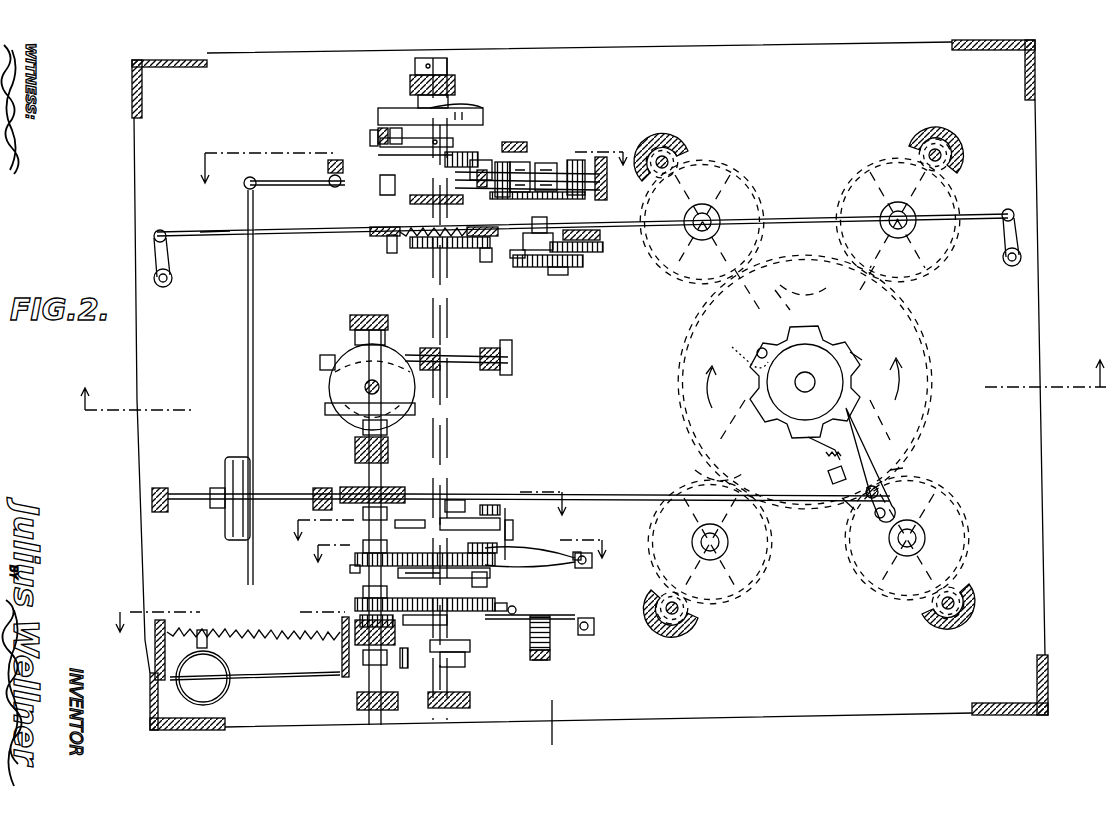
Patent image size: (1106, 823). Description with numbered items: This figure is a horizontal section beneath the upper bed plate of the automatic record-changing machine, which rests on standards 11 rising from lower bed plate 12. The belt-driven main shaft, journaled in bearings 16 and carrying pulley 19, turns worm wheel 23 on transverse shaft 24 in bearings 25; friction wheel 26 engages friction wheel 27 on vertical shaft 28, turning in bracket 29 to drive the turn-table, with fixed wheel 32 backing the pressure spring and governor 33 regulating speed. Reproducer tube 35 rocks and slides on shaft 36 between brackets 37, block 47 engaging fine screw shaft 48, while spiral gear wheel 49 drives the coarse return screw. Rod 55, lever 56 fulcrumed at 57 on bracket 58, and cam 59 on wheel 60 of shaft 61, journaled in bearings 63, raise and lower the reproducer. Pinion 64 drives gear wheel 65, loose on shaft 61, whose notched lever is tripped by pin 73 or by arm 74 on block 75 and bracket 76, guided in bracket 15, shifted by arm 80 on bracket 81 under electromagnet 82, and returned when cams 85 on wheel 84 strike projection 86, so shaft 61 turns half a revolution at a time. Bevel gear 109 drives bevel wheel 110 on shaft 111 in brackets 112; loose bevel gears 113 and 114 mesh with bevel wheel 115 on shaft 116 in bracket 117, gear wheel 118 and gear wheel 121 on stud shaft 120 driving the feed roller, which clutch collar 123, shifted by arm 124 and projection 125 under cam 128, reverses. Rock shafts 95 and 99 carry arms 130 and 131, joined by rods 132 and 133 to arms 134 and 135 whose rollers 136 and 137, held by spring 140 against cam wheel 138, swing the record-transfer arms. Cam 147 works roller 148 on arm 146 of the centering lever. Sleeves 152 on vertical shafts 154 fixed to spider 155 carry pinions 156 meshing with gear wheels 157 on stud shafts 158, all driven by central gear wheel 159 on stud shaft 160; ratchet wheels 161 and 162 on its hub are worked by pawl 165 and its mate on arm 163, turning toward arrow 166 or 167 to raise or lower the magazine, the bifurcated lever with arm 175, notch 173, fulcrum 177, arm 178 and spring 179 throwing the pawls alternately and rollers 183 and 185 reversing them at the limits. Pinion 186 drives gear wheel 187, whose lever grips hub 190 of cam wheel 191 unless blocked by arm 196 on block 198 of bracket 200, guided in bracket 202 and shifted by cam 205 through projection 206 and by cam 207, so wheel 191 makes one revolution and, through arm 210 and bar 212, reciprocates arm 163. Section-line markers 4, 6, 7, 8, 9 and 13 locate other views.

The standards 11 is at (172, 58).
The lower bed plate 12 is at (758, 47).
The gear 13 is at (290, 612).
The bracket 15 is at (570, 612).
The bearings 16 is at (152, 495).
The pulley 19 is at (225, 470).
The worm wheel 23 is at (345, 487).
The transverse driving shaft 24 is at (362, 546).
The bearings 25 is at (355, 450).
The friction wheel 26 is at (325, 410).
The friction wheel 27 is at (355, 348).
The vertical shaft 28 is at (365, 389).
The bracket 29 is at (365, 315).
The fixed wheel 32 is at (320, 368).
The governor 33 is at (462, 352).
The tube 35 is at (178, 680).
The shaft 36 is at (268, 674).
The brackets 37 is at (155, 655).
The block 47 is at (202, 630).
The fine screw-threaded shaft 48 is at (270, 630).
The spiral gear wheel 49 is at (355, 635).
The rod 55 is at (248, 297).
The lever 56 is at (285, 186).
The fulcrum 57 is at (335, 188).
The bracket 58 is at (328, 166).
The cam 59 is at (380, 157).
The cam wheel 60 is at (395, 112).
The shaft 61 is at (442, 57).
The bearings 63 is at (452, 78).
The pinion 64 is at (355, 560).
The gear wheel 65 is at (472, 578).
The pin 73 is at (413, 661).
The arm 74 is at (510, 608).
The block 75 is at (585, 636).
The bracket 76 is at (590, 632).
The arm 80 is at (514, 607).
The bracket 81 is at (546, 662).
The electromagnet 82 is at (550, 658).
The wheel 84 is at (465, 660).
The cams 85 is at (470, 645).
The projection 86 is at (550, 640).
The rock shaft 95 is at (1022, 258).
The rock shaft 99 is at (172, 278).
The bevel gear wheel 109 is at (410, 200).
The bevel wheel 110 is at (445, 180).
The shaft 111 is at (560, 170).
The brackets 112 is at (482, 188).
The bevel gear wheel 113 is at (508, 142).
The bevel gear wheel 114 is at (575, 160).
The bevel gear wheel 115 is at (585, 200).
The shaft 116 is at (548, 272).
The bracket 117 is at (600, 236).
The gear wheel 118 is at (520, 269).
The stud shaft 120 is at (577, 278).
The gear wheel 121 is at (592, 252).
The clutch collar 123 is at (545, 163).
The arm 124 is at (518, 162).
The projection 125 is at (505, 160).
The cam 128 is at (390, 140).
The arm 130 is at (1016, 238).
The arm 131 is at (152, 250).
The rod 132 is at (797, 212).
The rod 133 is at (212, 230).
The arm 134 is at (490, 256).
The arm 135 is at (378, 228).
The roller 136 is at (462, 249).
The roller 137 is at (387, 245).
The wheel 138 is at (470, 237).
The spring 140 is at (425, 228).
The arm 146 is at (378, 134).
The cam 147 is at (415, 68).
The roller 148 is at (372, 132).
The screw-threaded sleeves 152 is at (925, 150).
The vertical shafts 154 is at (660, 145).
The brace plate or spider 155 is at (968, 578).
The pinions 156 is at (685, 150).
The gear wheels 157 is at (722, 165).
The stud shafts 158 is at (895, 220).
The gear wheel 159 is at (932, 380).
The stud shaft 160 is at (805, 382).
The ratchet wheel 161 is at (862, 360).
The ratchet wheel 162 is at (840, 338).
The arm 163 is at (885, 488).
The pulling pawl 165 is at (815, 447).
The arrow 166 is at (729, 387).
The arrow 167 is at (913, 379).
The notch 173 is at (870, 455).
The arm 175 is at (902, 468).
The fulcrum 177 is at (828, 462).
The arm 178 is at (832, 478).
The spring 179 is at (840, 505).
The roller 183 is at (736, 347).
The roller 185 is at (763, 347).
The pinion 186 is at (350, 568).
The gear wheel 187 is at (532, 566).
The hub 190 is at (470, 518).
The cam wheel 191 is at (455, 500).
The arm 196 is at (532, 547).
The block 198 is at (589, 545).
The bracket 200 is at (592, 562).
The bracket 202 is at (510, 520).
The cam 205 is at (440, 582).
The projection 206 is at (490, 554).
The cam 207 is at (410, 518).
The arm 210 is at (500, 505).
The bar 212 is at (643, 495).
The section line 4- 4 is at (589, 403).
The section line 6- 6 is at (409, 149).
The section line 7- 7 is at (428, 508).
The section line 8- 8 is at (468, 557).
The section line 9- 9 is at (537, 634).